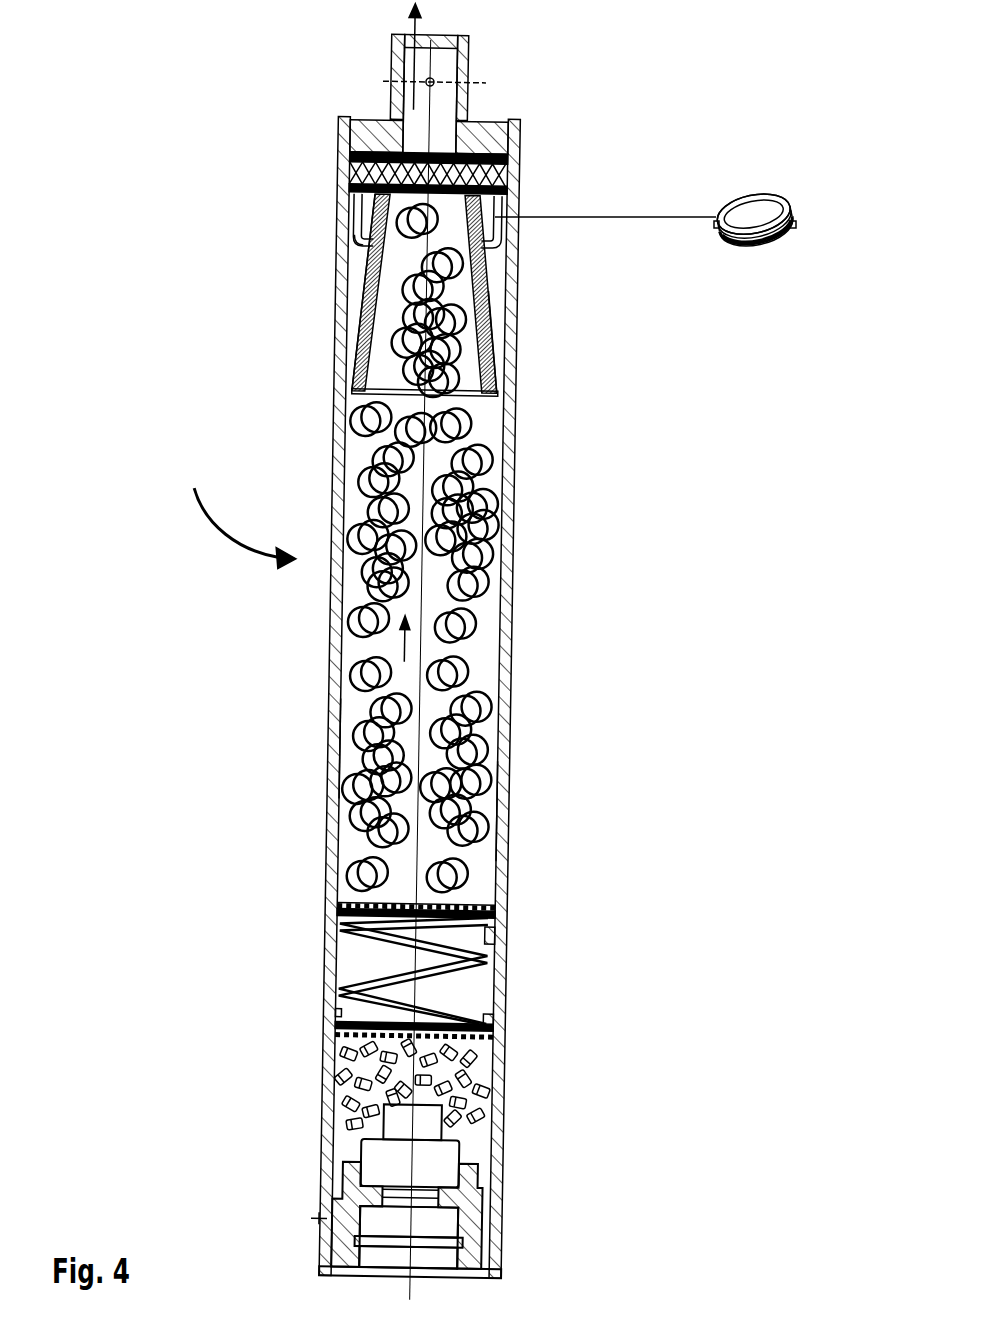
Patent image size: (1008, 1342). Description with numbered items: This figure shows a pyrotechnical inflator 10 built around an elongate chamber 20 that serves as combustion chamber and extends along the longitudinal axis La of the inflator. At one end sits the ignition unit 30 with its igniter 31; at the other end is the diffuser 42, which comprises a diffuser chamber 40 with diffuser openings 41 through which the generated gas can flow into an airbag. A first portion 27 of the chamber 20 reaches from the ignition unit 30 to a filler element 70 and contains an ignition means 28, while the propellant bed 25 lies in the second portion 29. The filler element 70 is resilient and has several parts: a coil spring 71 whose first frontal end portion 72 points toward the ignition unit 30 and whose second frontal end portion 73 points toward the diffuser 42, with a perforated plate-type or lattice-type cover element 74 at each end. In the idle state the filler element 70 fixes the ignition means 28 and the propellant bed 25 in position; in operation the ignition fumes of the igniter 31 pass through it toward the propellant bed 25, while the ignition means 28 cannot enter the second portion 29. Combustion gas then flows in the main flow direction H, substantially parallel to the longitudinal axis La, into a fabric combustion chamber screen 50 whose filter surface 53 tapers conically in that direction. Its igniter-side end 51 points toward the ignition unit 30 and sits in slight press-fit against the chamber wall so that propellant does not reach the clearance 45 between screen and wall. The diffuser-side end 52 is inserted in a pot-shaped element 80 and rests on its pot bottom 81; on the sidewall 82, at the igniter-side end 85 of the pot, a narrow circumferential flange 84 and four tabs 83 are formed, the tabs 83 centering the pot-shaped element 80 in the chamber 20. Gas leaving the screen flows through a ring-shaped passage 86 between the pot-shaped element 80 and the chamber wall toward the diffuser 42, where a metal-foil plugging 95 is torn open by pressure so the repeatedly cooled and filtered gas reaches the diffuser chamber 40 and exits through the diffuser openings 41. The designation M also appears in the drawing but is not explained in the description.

The inflator 10 is at (230, 513).
The chamber 20 is at (490, 631).
The propellant bed 25 is at (447, 383).
The first portion 27 is at (450, 1126).
The ignition means 28 is at (362, 1080).
The second portion 29 is at (517, 806).
The ignition unit 30 is at (507, 1268).
The igniter 31 is at (480, 1156).
The diffuser chamber 40 is at (410, 61).
The diffuser openings 41 is at (467, 81).
The diffuser 42 is at (456, 35).
The clearance 45 is at (366, 294).
The combustion chamber screen 50 is at (495, 288).
The igniter-side end 51 is at (363, 393).
The diffuser-side end 52 is at (360, 202).
The filter surface 53 is at (501, 361).
The filler element 70 is at (501, 933).
The spring 71 is at (505, 990).
The first frontal end portion 72 is at (509, 1027).
The second frontal end portion 73 is at (354, 908).
The cover element 74 is at (491, 905).
The pot-shaped element 80 is at (513, 146).
The pot bottom 81 is at (373, 157).
The sidewall 82 is at (790, 222).
The tabs 83 is at (800, 228).
The circumferential flange 84 is at (778, 245).
The igniter-side end 85 is at (508, 282).
The ring-shaped passage 86 is at (351, 242).
The plugging 95 is at (364, 148).
The main flow direction H is at (410, 655).
The medium M is at (338, 750).
The longitudinal axis La is at (432, 1295).